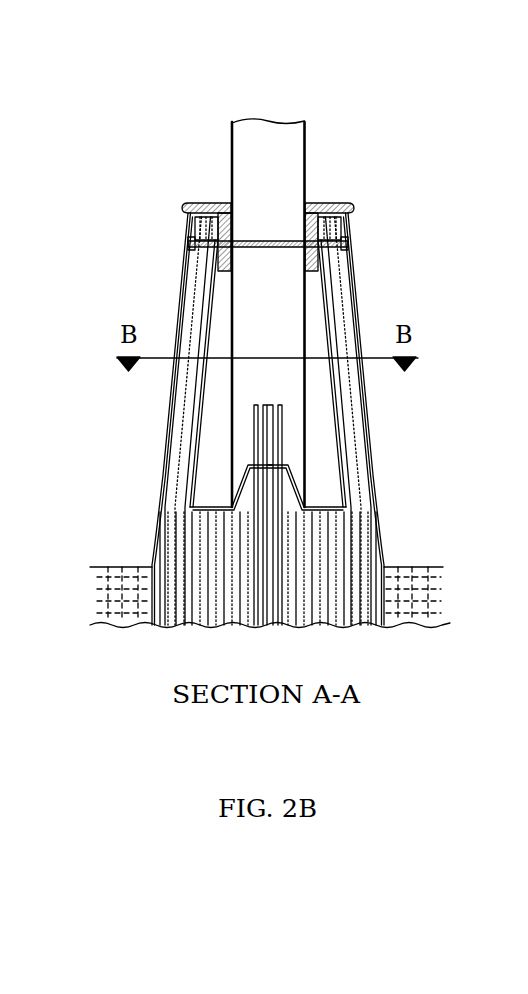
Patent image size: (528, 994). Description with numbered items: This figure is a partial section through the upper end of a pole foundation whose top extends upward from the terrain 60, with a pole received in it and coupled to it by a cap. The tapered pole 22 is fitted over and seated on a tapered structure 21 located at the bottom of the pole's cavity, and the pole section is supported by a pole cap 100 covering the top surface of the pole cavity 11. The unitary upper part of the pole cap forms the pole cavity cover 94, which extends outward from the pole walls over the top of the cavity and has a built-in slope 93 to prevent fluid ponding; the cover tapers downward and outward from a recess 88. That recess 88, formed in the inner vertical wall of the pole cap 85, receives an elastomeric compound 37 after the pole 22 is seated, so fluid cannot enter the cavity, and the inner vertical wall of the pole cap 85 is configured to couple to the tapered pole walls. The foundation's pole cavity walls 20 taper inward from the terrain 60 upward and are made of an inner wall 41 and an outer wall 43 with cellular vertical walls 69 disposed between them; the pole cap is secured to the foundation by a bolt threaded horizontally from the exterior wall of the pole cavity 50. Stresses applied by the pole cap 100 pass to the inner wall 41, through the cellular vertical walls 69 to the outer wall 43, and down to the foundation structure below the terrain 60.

The tapered pole 22 is at (230, 140).
The elastomeric compound 37 is at (164, 190).
The recess 88 is at (227, 203).
The built-in slope 93 is at (382, 192).
The pole cavity cover 94 is at (330, 203).
The pole cap 100 is at (353, 208).
The top surface of the pole cavity 11 is at (190, 238).
The inner vertical wall of the pole cap 85 is at (227, 260).
The cellular vertical walls 69 is at (337, 287).
The outer wall of the pole cavity 43 is at (370, 430).
The inner wall of the pole cavity 41 is at (327, 470).
The tapered structure 21 is at (330, 512).
The pole cavity walls 20 is at (207, 419).
The exterior wall of the pole cavity 50 is at (163, 450).
The terrain 60 is at (127, 567).